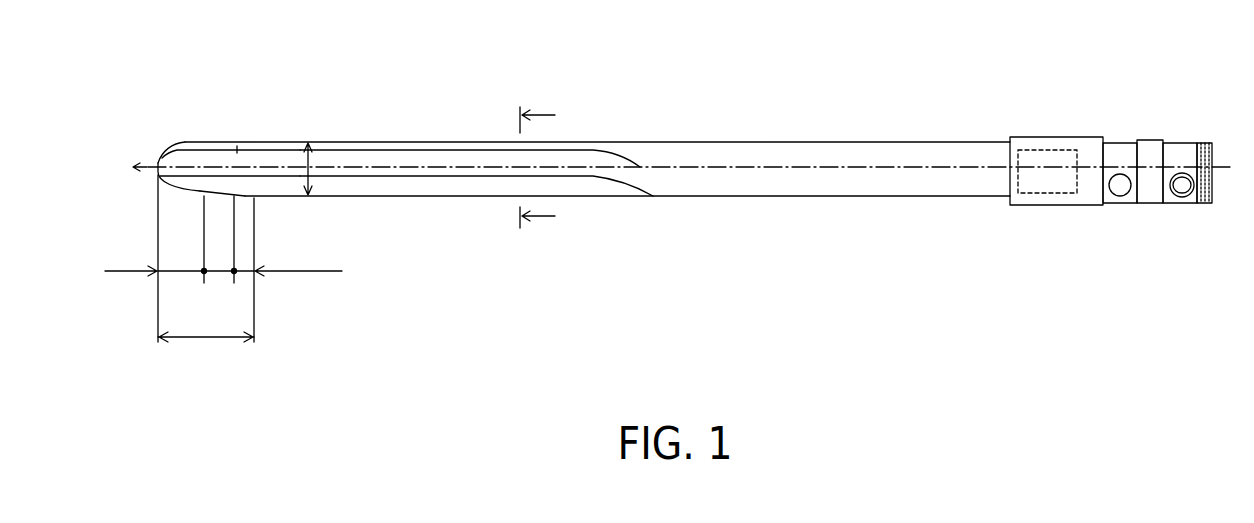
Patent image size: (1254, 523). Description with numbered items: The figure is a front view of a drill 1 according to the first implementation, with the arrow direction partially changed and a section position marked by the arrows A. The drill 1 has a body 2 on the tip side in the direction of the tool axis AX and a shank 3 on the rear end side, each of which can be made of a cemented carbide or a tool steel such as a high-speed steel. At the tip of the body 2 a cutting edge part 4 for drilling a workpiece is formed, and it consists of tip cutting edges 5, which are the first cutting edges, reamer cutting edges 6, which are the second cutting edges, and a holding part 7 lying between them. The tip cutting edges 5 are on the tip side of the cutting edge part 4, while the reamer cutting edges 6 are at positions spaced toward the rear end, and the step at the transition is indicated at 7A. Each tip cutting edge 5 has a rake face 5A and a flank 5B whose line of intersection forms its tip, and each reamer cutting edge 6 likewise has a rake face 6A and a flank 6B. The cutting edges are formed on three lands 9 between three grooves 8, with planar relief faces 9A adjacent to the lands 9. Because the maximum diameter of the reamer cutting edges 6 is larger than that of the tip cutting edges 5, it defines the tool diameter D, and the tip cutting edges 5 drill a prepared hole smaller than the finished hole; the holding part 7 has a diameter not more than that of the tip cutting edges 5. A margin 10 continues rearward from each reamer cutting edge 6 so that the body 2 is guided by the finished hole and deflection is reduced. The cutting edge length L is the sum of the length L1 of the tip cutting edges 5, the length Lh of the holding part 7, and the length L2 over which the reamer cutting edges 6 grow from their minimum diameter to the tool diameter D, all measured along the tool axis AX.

The drill 1 is at (952, 67).
The body 2 is at (953, 135).
The shank 3 is at (1054, 135).
The cutting edge part 4 is at (283, 62).
The tip cutting edge 5 is at (197, 141).
The rake face 5A is at (188, 179).
The flank 5B is at (190, 142).
The reamer cutting edge 6 is at (243, 140).
The rake face 6A is at (245, 193).
The flank 6B is at (256, 148).
The holding part 7 is at (220, 141).
The step portion 7A is at (232, 141).
The groove 8 is at (377, 162).
The land 9 is at (420, 141).
The planar relief face 9A is at (480, 158).
The margin 10 is at (342, 141).
The tool axis AX is at (660, 166).
The section line A- A is at (548, 165).
The tool diameter D is at (320, 186).
The cutting edge length L is at (206, 258).
The length of the tip cutting edges L1 is at (109, 269).
The length of the reamer cutting edges L2 is at (311, 270).
The length of the holding part Lh is at (220, 275).